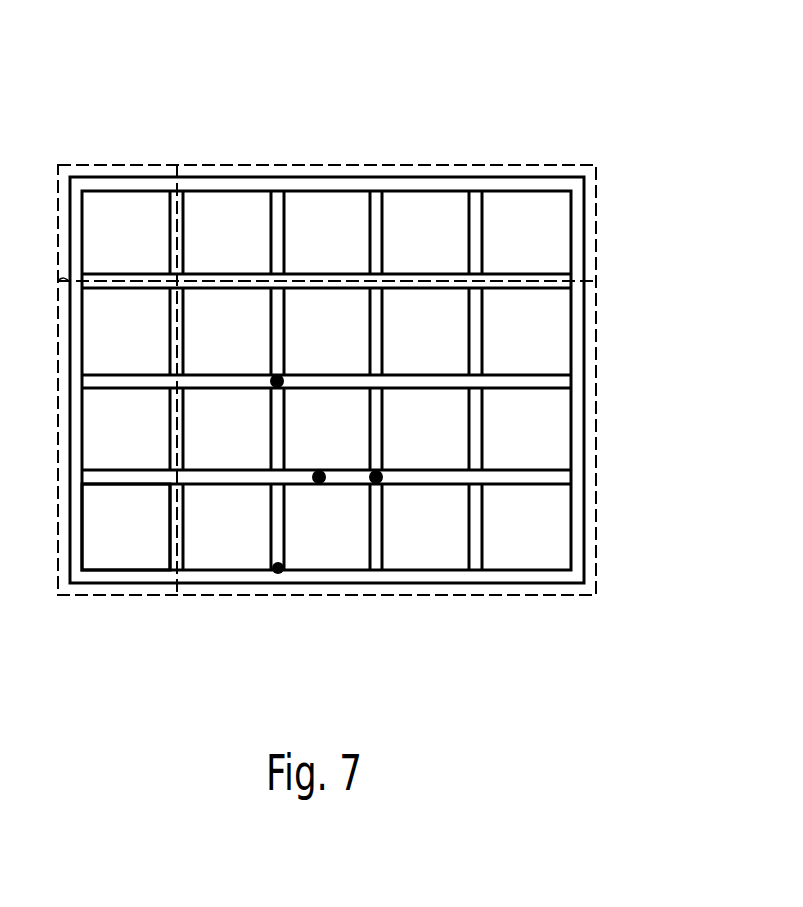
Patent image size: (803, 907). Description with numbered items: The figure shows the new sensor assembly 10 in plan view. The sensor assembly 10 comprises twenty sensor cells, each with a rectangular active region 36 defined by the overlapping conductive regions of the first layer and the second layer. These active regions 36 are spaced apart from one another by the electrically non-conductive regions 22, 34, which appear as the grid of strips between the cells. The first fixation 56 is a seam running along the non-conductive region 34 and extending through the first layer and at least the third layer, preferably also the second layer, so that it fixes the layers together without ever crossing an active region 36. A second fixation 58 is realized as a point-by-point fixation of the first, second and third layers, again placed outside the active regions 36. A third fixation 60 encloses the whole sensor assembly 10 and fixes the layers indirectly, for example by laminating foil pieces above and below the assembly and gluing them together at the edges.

The sensor assembly 10 is at (337, 70).
The electrically non-conductive region 22 is at (278, 572).
The electrically non-conductive region 34 is at (584, 380).
The active region 36 is at (128, 540).
The first fixation 56 is at (423, 281).
The second fixation 58 is at (383, 484).
The third fixation 60 is at (524, 596).